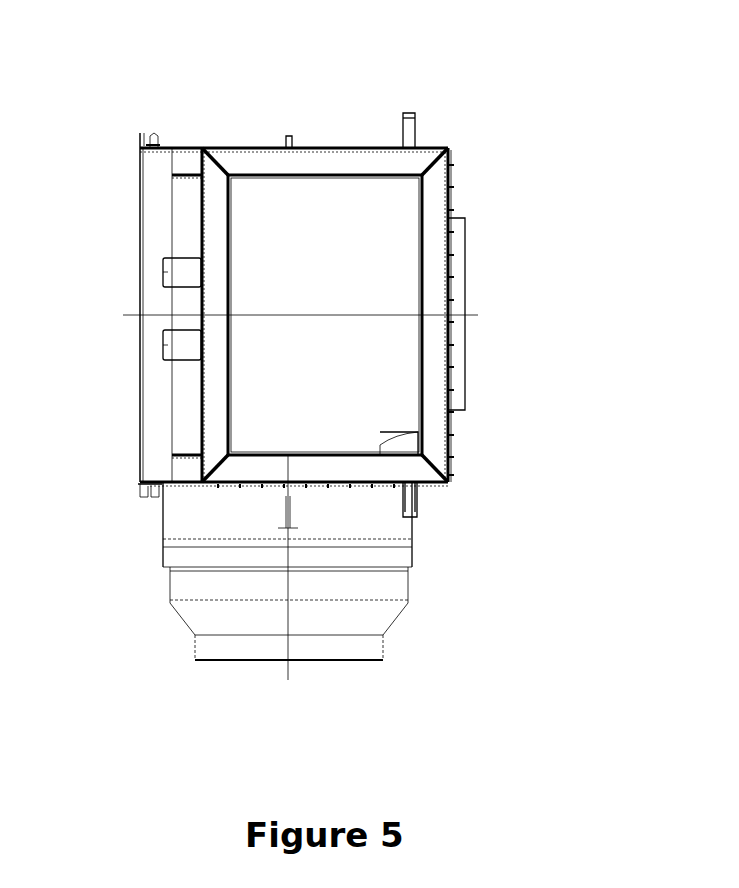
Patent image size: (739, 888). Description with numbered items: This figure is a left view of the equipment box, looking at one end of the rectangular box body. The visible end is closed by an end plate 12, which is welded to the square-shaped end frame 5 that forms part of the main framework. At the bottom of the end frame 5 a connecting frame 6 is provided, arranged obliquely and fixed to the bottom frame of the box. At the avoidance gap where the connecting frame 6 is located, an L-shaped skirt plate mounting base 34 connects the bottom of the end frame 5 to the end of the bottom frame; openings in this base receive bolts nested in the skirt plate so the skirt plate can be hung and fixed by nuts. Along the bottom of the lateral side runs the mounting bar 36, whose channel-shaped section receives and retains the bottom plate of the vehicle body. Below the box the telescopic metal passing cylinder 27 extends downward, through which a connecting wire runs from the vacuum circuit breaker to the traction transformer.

The end frame 5 is at (354, 264).
The end plate 12 is at (325, 232).
The connecting frame 6 is at (130, 307).
The skirt plate mounting base 34 is at (129, 355).
The mounting bar 36 is at (110, 532).
The metal passing cylinder 27 is at (308, 625).